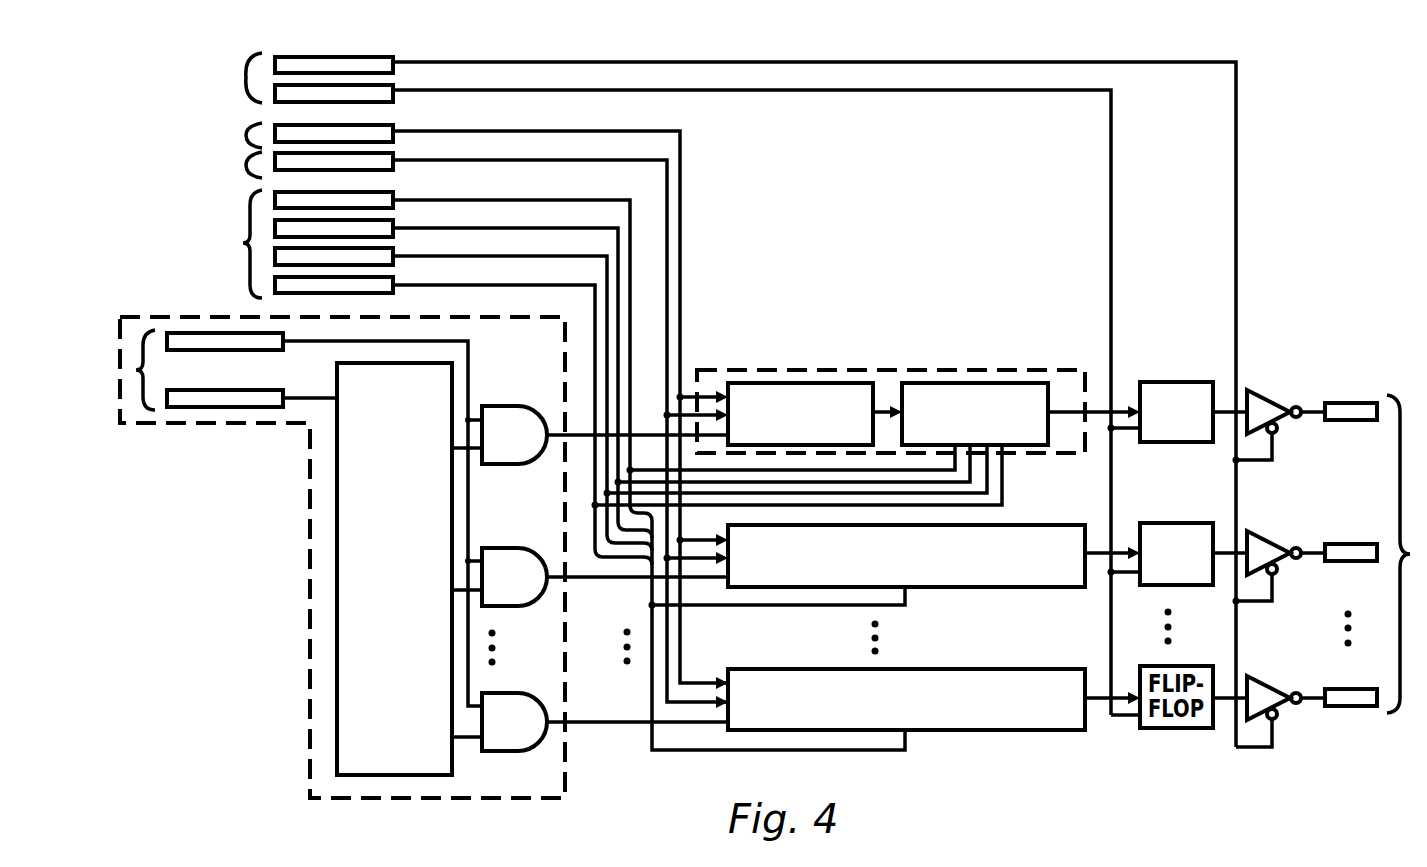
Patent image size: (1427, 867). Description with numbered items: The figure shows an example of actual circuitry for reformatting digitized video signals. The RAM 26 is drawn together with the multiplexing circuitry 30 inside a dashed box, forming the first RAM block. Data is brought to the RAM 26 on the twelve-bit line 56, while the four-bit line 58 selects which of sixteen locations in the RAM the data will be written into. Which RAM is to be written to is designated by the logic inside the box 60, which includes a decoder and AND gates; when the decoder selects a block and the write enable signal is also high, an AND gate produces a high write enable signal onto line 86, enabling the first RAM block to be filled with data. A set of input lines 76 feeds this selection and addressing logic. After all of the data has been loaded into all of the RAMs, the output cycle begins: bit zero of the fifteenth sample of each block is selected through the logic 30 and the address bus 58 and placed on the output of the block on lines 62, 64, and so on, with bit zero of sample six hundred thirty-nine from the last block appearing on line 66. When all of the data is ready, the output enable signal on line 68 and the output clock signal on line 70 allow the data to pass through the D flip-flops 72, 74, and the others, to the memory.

The output enable signal line 68 is at (337, 63).
The output clock signal line 70 is at (378, 92).
The 4-bit address line 58 is at (345, 128).
The 12-bit data line 56 is at (345, 161).
The address input lines 76 is at (237, 246).
The RAM selection logic box 60 is at (342, 557).
The write enable line 86 is at (557, 432).
The RAM 26 is at (787, 383).
The multiplexing circuitry 30 is at (972, 383).
The block output line 62 is at (1098, 410).
The block output line 64 is at (1098, 553).
The block output line 66 is at (1098, 698).
The D flip-flop 72 is at (1166, 382).
The D flip-flop 74 is at (1166, 523).